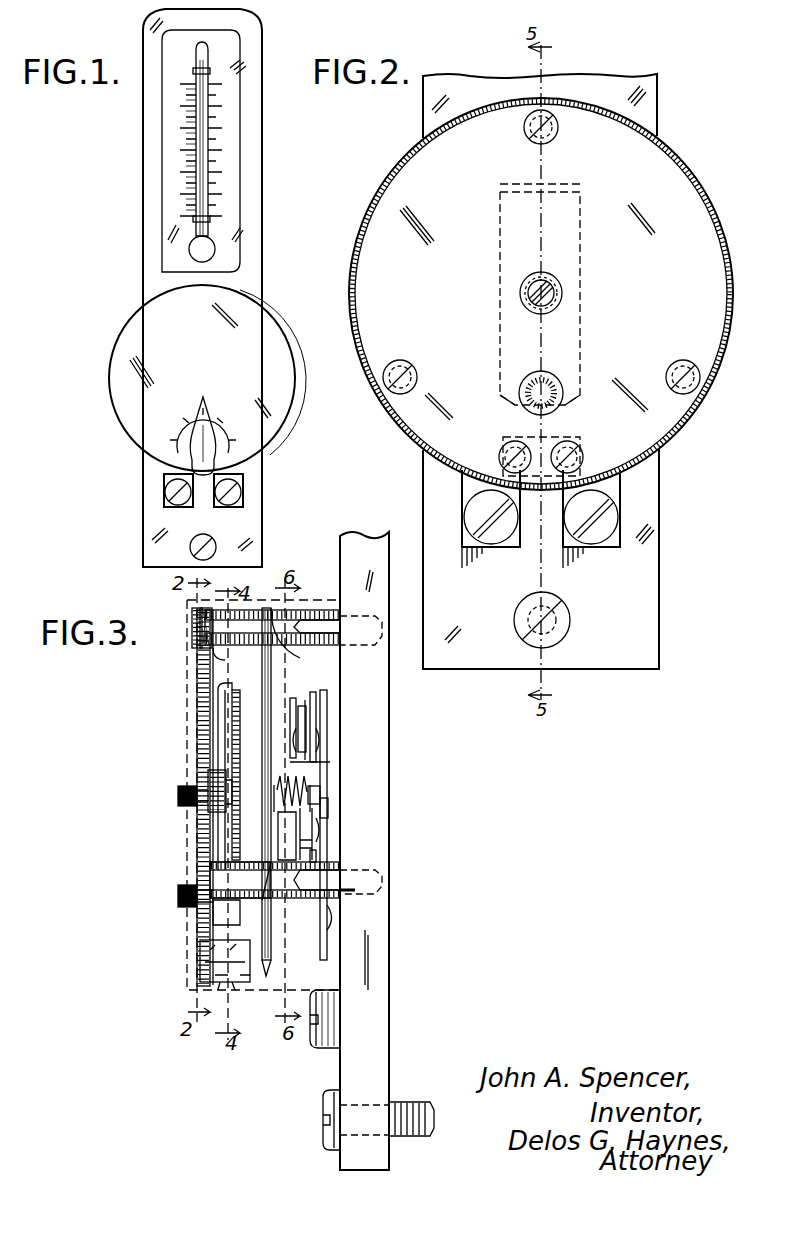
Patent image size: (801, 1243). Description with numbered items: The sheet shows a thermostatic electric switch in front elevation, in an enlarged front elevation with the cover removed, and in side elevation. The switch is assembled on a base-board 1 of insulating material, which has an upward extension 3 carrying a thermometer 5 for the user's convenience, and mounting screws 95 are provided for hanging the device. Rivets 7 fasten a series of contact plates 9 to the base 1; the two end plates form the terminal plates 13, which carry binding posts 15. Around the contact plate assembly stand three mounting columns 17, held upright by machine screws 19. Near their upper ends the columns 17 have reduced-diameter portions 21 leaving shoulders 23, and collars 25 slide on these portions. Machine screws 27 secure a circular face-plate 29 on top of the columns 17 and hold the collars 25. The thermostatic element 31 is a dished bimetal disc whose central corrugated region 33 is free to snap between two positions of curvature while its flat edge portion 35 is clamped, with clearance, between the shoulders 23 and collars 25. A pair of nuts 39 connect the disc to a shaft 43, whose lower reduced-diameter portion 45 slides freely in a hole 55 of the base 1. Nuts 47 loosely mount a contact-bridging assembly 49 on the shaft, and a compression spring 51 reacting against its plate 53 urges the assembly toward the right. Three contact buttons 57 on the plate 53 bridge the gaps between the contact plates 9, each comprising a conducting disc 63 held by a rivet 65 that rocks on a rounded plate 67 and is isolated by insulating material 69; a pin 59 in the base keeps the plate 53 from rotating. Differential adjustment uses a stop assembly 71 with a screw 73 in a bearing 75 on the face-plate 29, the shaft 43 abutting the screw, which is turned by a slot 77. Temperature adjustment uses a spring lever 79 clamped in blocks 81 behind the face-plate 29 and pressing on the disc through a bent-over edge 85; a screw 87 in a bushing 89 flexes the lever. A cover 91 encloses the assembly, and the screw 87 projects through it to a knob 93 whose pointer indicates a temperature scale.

In FIG. 1, the base-board 1 is at (250, 520).
In FIG. 2, the base-board 1 is at (646, 592).
In FIG. 3, the base-board 1 is at (392, 1002).
In FIG. 1, the upward extension of the base 3 is at (250, 176).
In FIG. 2, the upward extension of the base 3 is at (420, 105).
In FIG. 3, the upward extension of the base 3 is at (370, 545).
In FIG. 1, the thermometer 5 is at (206, 128).
In FIG. 3, the rivets 7 is at (352, 935).
In FIG. 3, the contact plates 9 is at (330, 712).
In FIG. 1, the terminal plates 13 is at (272, 473).
In FIG. 2, the terminal plates 13 is at (622, 486).
In FIG. 3, the terminal plates 13 is at (342, 966).
In FIG. 1, the binding posts 15 is at (272, 496).
In FIG. 2, the binding posts 15 is at (628, 517).
In FIG. 3, the binding posts 15 is at (318, 1048).
In FIG. 3, the mounting columns 17 is at (280, 895).
In FIG. 3, the machine screws 19 is at (402, 858).
In FIG. 3, the reduced-diameter portions 21 is at (270, 898).
In FIG. 3, the shoulders 23 is at (262, 870).
In FIG. 3, the collars 25 is at (213, 912).
In FIG. 2, the machine screws 27 is at (686, 360).
In FIG. 3, the machine screws 27 is at (196, 640).
In FIG. 2, the face-plate 29 is at (385, 297).
In FIG. 3, the face-plate 29 is at (197, 720).
In FIG. 3, the thermostatic element 31 is at (224, 768).
In FIG. 3, the corrugated region 33 is at (272, 695).
In FIG. 3, the flat edge portion 35 is at (267, 966).
In FIG. 3, the nuts 39 is at (245, 812).
In FIG. 3, the shaft 43 is at (320, 794).
In FIG. 3, the reduced-diameter portion of shaft 45 is at (330, 814).
In FIG. 3, the nuts 47 is at (313, 822).
In FIG. 3, the contact-bridging assembly 49 is at (305, 770).
In FIG. 3, the compression spring 51 is at (291, 836).
In FIG. 3, the plate 53 is at (313, 838).
In FIG. 3, the hole 55 is at (328, 800).
In FIG. 3, the contact buttons 57 is at (307, 728).
In FIG. 3, the pin 59 is at (356, 892).
In FIG. 3, the disc 63 is at (298, 712).
In FIG. 3, the rivet 65 is at (388, 834).
In FIG. 3, the rounded plate 67 is at (352, 866).
In FIG. 3, the insulating material 69 is at (310, 700).
In FIG. 2, the stop assembly 71 is at (506, 308).
In FIG. 3, the stop assembly 71 is at (166, 799).
In FIG. 2, the screw 73 is at (555, 293).
In FIG. 3, the screw 73 is at (208, 780).
In FIG. 2, the bearing 75 is at (556, 280).
In FIG. 3, the bearing 75 is at (226, 800).
In FIG. 2, the slot 77 is at (550, 300).
In FIG. 3, the slot 77 is at (196, 800).
In FIG. 2, the spring lever 79 is at (582, 230).
In FIG. 3, the spring lever 79 is at (213, 740).
In FIG. 2, the clamping blocks 81 is at (584, 442).
In FIG. 3, the clamping blocks 81 is at (222, 992).
In FIG. 2, the bent-over edge 85 is at (565, 186).
In FIG. 3, the bent-over edge 85 is at (218, 690).
In FIG. 2, the screw 87 is at (552, 390).
In FIG. 3, the screw 87 is at (176, 896).
In FIG. 2, the bushing 89 is at (526, 408).
In FIG. 3, the bushing 89 is at (213, 920).
In FIG. 1, the cover 91 is at (112, 370).
In FIG. 2, the cover 91 is at (372, 210).
In FIG. 3, the cover 91 is at (187, 985).
In FIG. 1, the knob 93 is at (205, 432).
In FIG. 1, the mounting screws 95 is at (190, 548).
In FIG. 2, the mounting screws 95 is at (520, 630).
In FIG. 3, the mounting screws 95 is at (395, 1100).